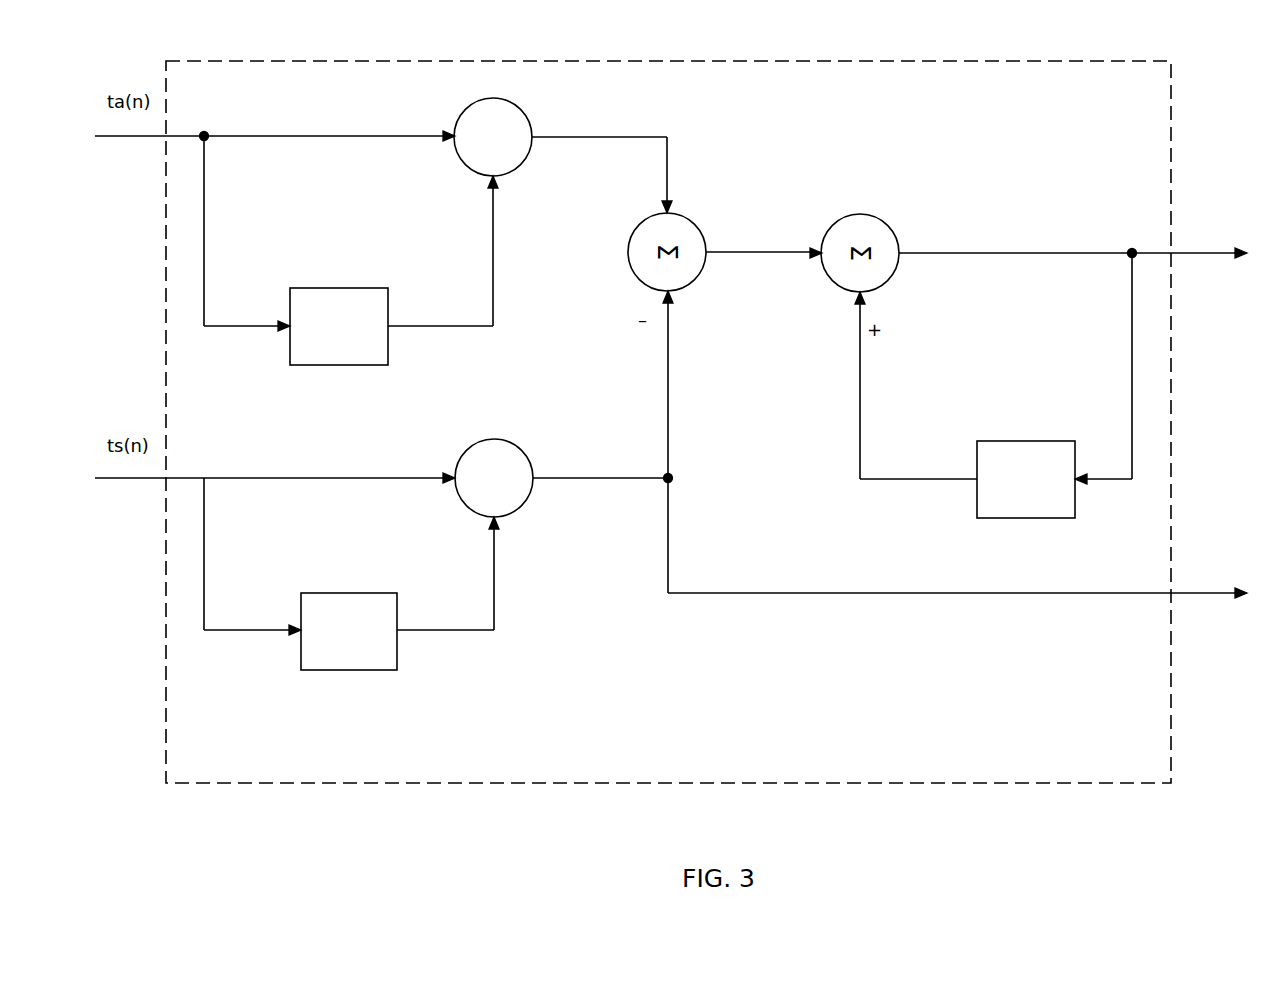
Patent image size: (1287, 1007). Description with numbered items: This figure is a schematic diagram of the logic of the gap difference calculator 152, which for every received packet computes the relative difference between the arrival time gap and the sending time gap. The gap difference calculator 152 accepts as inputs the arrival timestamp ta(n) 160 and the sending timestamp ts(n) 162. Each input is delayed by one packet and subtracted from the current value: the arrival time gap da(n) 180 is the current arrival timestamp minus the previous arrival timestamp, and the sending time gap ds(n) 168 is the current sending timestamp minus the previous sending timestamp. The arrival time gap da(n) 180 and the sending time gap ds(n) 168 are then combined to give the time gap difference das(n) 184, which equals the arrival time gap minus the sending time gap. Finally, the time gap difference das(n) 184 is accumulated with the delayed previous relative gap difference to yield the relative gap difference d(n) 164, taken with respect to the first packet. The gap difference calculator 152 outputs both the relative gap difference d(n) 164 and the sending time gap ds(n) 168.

The gap difference calculator 152 is at (1088, 133).
The arrival timestamp ta(n) 160 is at (357, 135).
The sending timestamp ts(n) 162 is at (338, 478).
The relative gap difference d(n) 164 is at (995, 253).
The sending time gap ds(n) 168 is at (573, 478).
The arrival time gap da(n) 180 is at (647, 133).
The time gap difference das(n) 184 is at (752, 253).